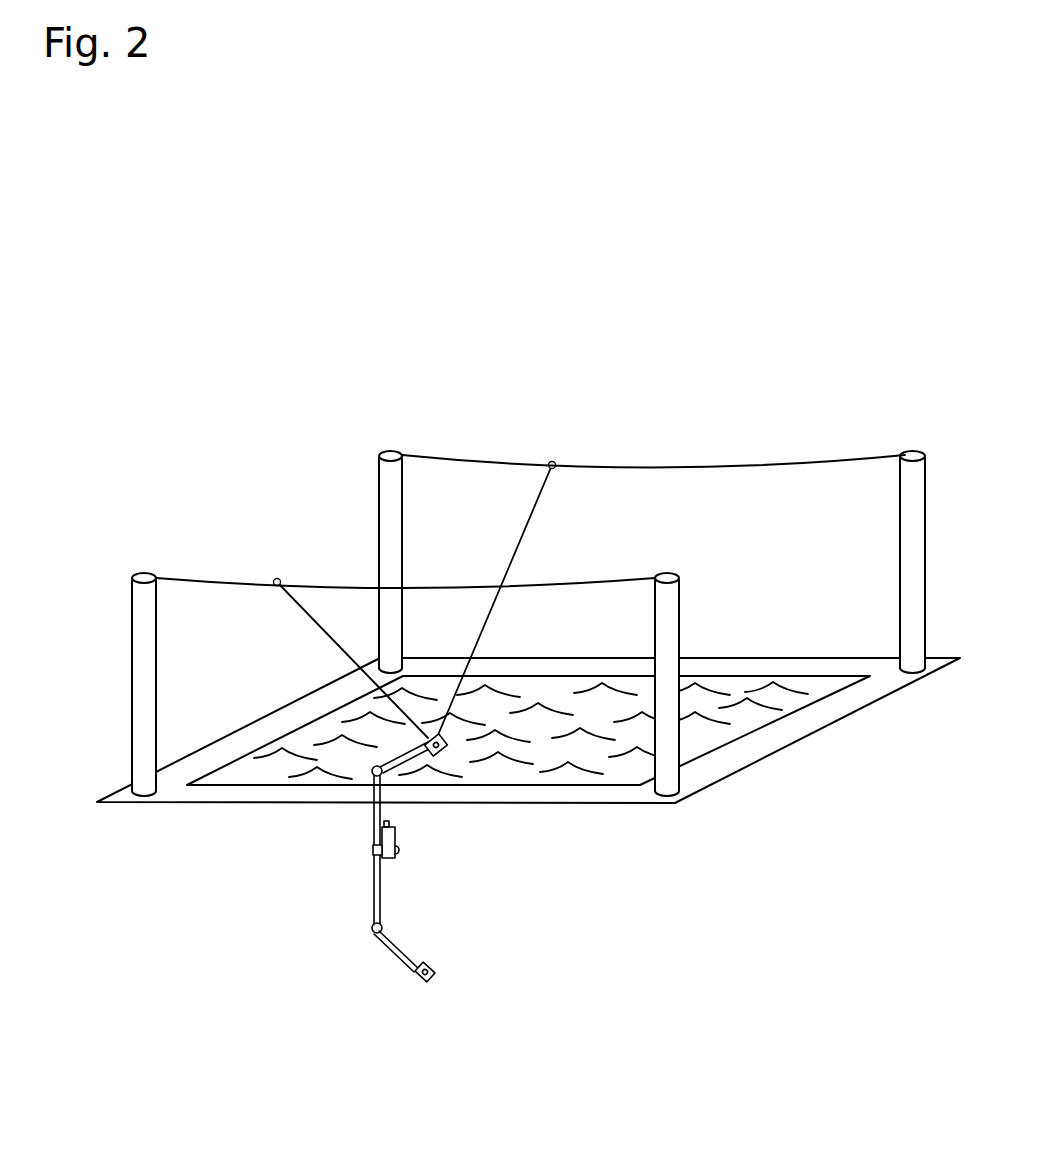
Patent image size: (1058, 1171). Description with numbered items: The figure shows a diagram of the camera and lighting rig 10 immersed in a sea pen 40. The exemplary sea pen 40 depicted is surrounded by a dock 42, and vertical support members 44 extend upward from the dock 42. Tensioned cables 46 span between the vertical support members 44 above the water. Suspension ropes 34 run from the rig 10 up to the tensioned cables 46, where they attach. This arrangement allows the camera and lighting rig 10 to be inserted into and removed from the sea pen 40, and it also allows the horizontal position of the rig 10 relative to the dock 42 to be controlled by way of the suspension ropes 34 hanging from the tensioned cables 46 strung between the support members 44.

The camera and lighting rig 10 is at (356, 866).
The suspension ropes 34 is at (522, 532).
The sea pen 40 is at (747, 615).
The dock 42 is at (580, 794).
The vertical support members 44 is at (380, 496).
The tensioned cables 46 is at (697, 467).